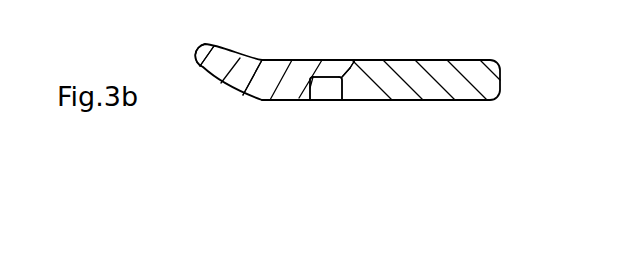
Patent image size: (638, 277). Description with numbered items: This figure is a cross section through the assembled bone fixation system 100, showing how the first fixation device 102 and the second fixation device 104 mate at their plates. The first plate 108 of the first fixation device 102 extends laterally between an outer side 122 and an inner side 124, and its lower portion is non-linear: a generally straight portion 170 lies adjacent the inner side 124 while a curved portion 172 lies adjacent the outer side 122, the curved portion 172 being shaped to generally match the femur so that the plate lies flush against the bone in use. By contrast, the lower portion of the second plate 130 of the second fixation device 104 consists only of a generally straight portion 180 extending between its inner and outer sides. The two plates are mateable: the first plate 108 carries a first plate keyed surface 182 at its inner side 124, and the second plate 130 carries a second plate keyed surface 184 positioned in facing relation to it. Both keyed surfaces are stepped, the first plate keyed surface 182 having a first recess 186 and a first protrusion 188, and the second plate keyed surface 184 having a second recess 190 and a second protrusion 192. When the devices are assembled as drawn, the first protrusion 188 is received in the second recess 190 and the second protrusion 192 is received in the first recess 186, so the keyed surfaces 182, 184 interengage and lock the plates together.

The connector assembly 100 is at (332, 113).
The first fixation device 102 is at (222, 83).
The second fixation device 104 is at (401, 97).
The first plate 108 is at (260, 95).
The outer side 122 is at (180, 52).
The inner side 124 is at (341, 59).
The second plate 130 is at (477, 66).
The generally straight portion 170 is at (283, 70).
The curved portion 172 is at (230, 46).
The generally straight portion 180 is at (358, 106).
The first plate keyed surface 182 is at (312, 92).
The second plate keyed surface 184 is at (343, 88).
The first recess 186 is at (301, 88).
The first protrusion 188 is at (334, 72).
The second recess 190 is at (363, 60).
The second protrusion 192 is at (328, 86).